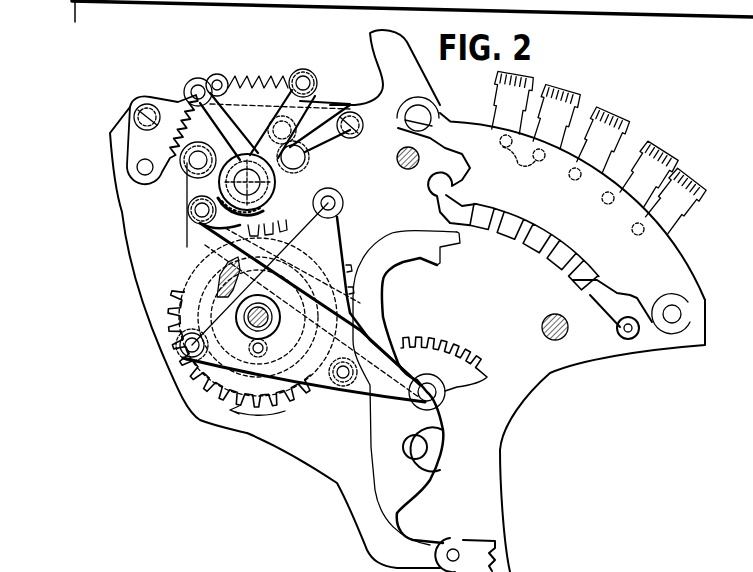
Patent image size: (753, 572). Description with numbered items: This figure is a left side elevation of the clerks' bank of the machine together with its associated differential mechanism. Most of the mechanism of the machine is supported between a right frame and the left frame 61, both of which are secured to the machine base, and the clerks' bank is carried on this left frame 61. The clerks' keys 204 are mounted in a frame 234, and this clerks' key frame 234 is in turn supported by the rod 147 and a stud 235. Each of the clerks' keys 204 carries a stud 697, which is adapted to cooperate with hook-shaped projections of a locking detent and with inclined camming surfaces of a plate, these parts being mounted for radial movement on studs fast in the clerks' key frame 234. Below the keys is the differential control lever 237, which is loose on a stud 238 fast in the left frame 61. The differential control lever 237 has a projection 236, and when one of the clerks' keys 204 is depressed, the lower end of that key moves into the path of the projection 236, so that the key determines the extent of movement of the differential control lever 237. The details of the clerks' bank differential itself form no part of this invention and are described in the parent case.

The rod 147 is at (432, 115).
The clerks' keys 204 is at (577, 108).
The stud 697 is at (520, 165).
The frame 234 is at (663, 245).
The left frame 61 is at (681, 314).
The stud 235 is at (670, 326).
The projection 236 is at (462, 237).
The differential control lever 237 is at (428, 377).
The stud 238 is at (420, 445).